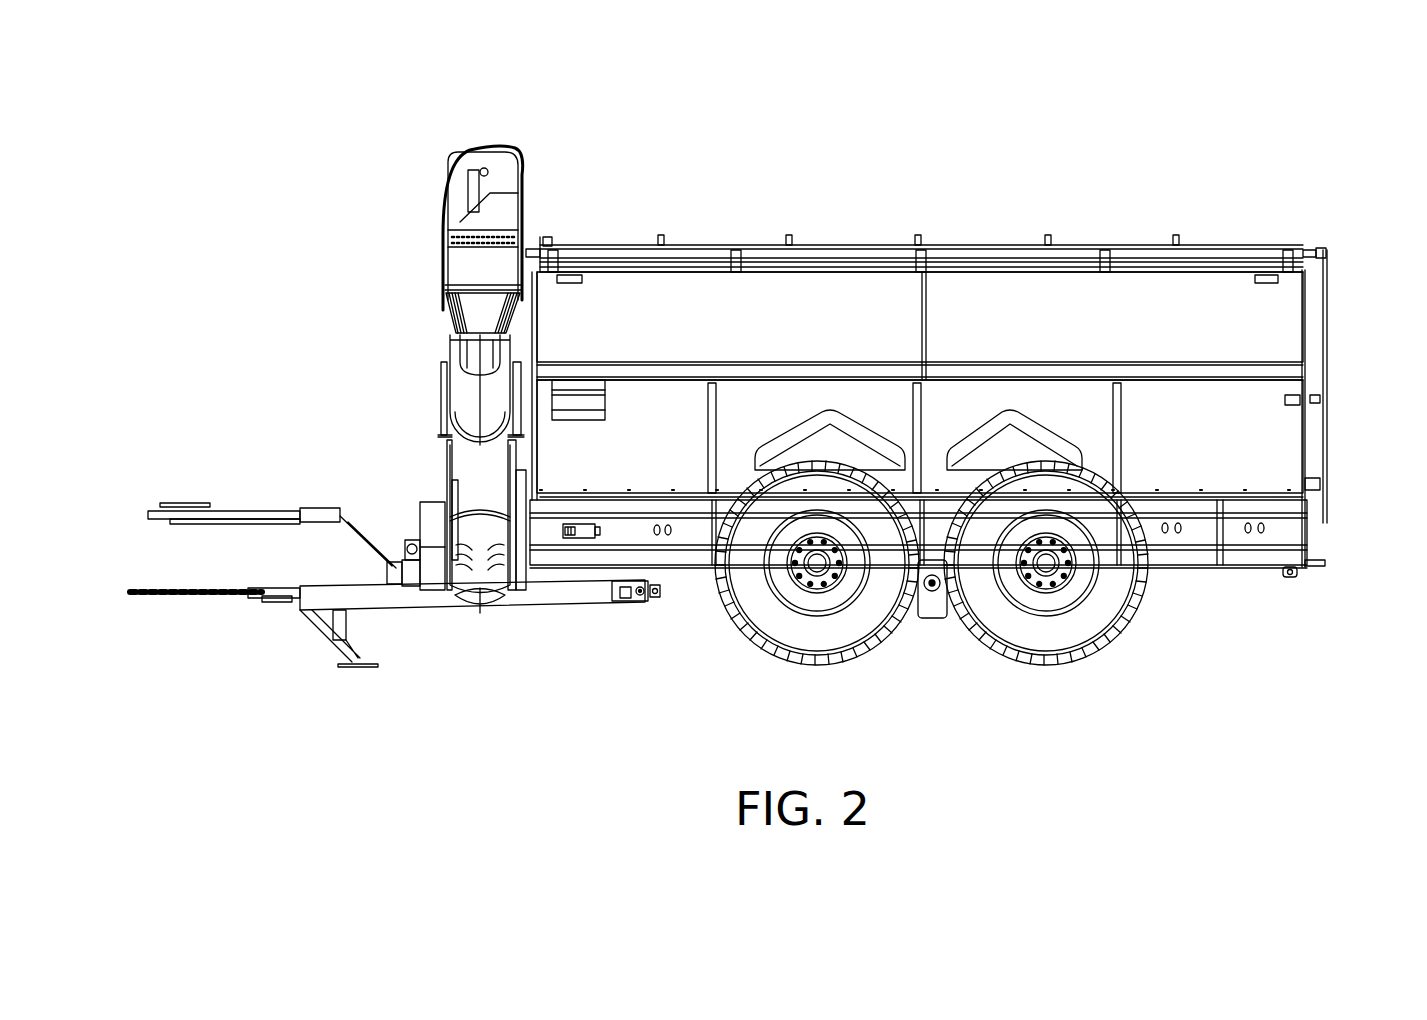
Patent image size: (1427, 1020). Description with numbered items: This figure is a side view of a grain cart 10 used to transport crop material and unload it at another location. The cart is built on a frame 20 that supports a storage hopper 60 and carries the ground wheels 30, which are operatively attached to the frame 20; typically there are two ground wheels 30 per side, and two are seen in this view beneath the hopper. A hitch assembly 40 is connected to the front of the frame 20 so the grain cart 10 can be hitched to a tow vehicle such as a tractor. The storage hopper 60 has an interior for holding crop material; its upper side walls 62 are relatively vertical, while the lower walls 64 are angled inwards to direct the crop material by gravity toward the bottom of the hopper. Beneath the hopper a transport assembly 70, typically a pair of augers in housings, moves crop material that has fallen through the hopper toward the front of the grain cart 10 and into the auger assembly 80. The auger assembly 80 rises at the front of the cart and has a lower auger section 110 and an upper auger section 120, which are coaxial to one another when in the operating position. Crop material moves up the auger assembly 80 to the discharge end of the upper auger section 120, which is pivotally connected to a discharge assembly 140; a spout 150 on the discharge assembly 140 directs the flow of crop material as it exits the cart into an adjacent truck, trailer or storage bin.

The grain cart 10 is at (1133, 165).
The frame 20 is at (1205, 562).
The ground wheels 30 is at (768, 660).
The hitch assembly 40 is at (393, 610).
The storage hopper 60 is at (855, 238).
The upper side walls 62 is at (1250, 333).
The lower walls 64 is at (1252, 430).
The transport assembly 70 is at (688, 528).
The auger assembly 80 is at (400, 366).
The lower auger section 110 is at (470, 462).
The upper auger section 120 is at (448, 352).
The discharge assembly 140 is at (505, 200).
The spout 150 is at (480, 305).